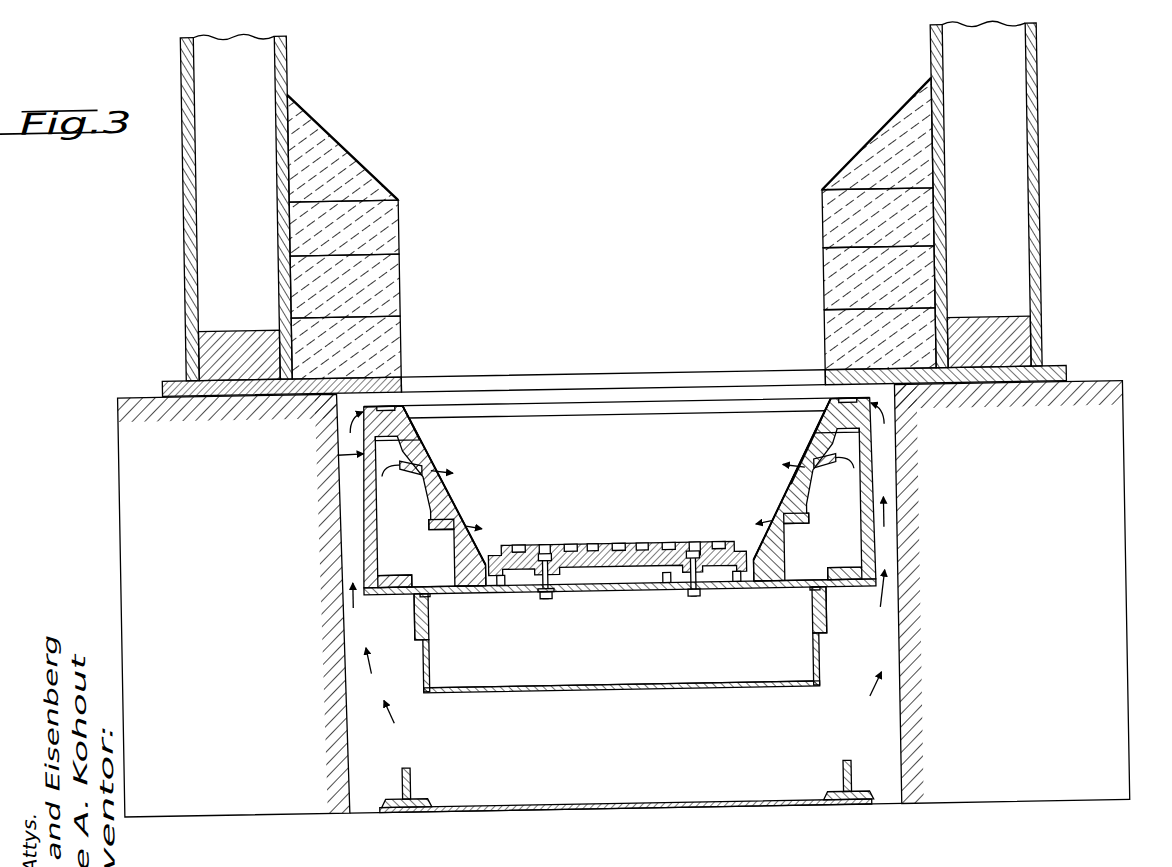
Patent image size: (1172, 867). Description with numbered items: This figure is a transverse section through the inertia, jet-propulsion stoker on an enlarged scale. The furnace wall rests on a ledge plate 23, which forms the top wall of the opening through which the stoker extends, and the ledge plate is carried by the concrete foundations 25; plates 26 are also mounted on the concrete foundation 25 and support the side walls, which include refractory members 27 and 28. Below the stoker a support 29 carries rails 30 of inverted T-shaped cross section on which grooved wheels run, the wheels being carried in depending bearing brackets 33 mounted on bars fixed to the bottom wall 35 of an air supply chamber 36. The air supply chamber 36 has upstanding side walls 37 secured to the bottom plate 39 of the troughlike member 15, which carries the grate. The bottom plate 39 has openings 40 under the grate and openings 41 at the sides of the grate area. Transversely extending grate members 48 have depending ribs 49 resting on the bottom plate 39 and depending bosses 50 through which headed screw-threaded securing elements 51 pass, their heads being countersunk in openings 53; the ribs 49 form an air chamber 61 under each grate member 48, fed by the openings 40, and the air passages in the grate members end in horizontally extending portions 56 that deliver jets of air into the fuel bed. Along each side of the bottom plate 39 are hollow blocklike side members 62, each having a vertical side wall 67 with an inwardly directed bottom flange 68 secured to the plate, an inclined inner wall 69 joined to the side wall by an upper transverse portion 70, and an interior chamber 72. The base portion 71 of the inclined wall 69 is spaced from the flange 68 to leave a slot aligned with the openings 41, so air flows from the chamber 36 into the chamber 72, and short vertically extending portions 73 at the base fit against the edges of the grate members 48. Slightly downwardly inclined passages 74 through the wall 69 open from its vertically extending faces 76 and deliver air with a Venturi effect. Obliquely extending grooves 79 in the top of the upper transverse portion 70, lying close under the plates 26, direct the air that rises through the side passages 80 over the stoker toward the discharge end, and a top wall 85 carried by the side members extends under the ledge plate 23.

The troughlike member 15 is at (338, 449).
The ledge plate 23 is at (645, 372).
The concrete foundation 25 is at (124, 400).
The plate 26 is at (173, 372).
The refractory member 27 is at (404, 262).
The refractory member 28 is at (374, 172).
The support 29 is at (640, 802).
The rail 30 is at (408, 783).
The bearing bracket 33 is at (418, 606).
The bottom wall 35 is at (604, 686).
The air supply chamber 36 is at (622, 663).
The side wall 37 is at (421, 667).
The bottom plate 39 is at (600, 580).
The opening 40 is at (660, 587).
The opening 41 is at (424, 566).
The grate member 48 is at (605, 566).
The depending rib 49 is at (533, 590).
The depending boss 50 is at (550, 592).
The securing element 51 is at (545, 597).
The opening 53 is at (547, 543).
The horizontally extending portion 56 is at (670, 548).
The air chamber 61 is at (640, 583).
The side member 62 is at (412, 416).
The side wall 67 is at (426, 514).
The bottom flange 68 is at (416, 566).
The inclined inner wall 69 is at (808, 461).
The upper transverse portion 70 is at (392, 424).
The base portion 71 is at (468, 590).
The chamber 72 is at (387, 494).
The short vertically extending portion 73 is at (486, 592).
The passage 74 is at (420, 461).
The vertically extending face 76 is at (430, 505).
The groove 79 is at (392, 406).
The passage 80 is at (352, 536).
The top wall 85 is at (614, 415).